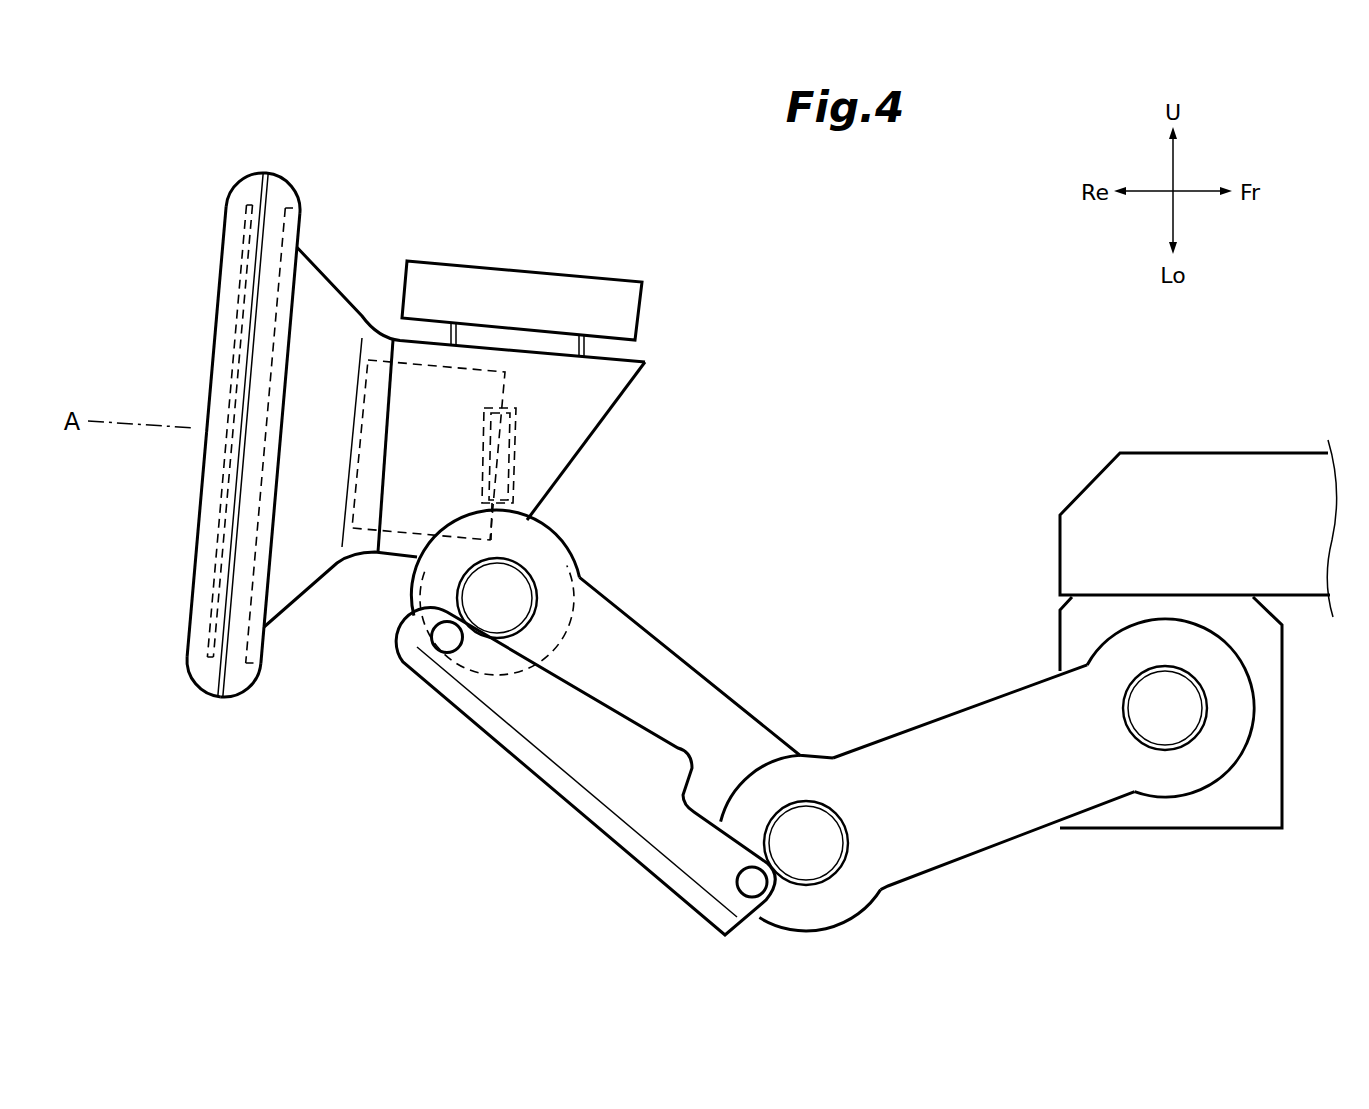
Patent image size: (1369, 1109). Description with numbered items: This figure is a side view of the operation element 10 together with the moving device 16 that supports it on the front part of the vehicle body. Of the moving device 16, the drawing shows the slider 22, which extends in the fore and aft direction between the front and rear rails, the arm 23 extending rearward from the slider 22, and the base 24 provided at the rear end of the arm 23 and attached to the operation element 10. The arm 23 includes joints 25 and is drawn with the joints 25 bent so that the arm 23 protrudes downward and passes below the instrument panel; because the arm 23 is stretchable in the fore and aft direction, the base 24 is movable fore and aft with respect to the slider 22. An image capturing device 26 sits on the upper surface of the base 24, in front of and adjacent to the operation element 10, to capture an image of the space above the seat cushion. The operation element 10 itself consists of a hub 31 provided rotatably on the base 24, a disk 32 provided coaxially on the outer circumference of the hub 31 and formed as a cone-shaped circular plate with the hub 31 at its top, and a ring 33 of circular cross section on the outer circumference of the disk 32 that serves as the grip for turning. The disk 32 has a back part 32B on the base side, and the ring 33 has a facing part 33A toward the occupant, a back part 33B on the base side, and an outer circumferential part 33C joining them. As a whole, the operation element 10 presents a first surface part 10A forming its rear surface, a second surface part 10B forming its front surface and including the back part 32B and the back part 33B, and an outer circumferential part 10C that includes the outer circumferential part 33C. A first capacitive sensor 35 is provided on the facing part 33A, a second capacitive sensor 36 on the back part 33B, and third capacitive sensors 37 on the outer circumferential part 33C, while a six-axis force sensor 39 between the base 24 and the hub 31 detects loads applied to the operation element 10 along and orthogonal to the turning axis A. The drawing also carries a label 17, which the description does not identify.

The operation element 10 is at (349, 159).
The first surface part 10A is at (208, 366).
The second surface part 10B is at (304, 219).
The outer circumferential part 10C is at (226, 699).
The moving device 16 is at (1078, 441).
The link mechanism 17 is at (859, 445).
The slider 22 is at (1207, 453).
The arm 23 is at (946, 710).
The base 24 is at (606, 404).
The joints 25 is at (512, 577).
The image capturing device 26 is at (548, 262).
The hub 31 is at (388, 535).
The disk 32 is at (324, 276).
The back part 32B is at (278, 603).
The ring 33 is at (243, 187).
The facing part 33A is at (188, 608).
The back part 33B is at (267, 647).
The outer circumferential part 33C is at (218, 697).
The first capacitive sensor 35 is at (240, 280).
The second capacitive sensor 36 is at (253, 685).
The third capacitive sensors 37 is at (266, 176).
The force sensor 39 is at (515, 447).